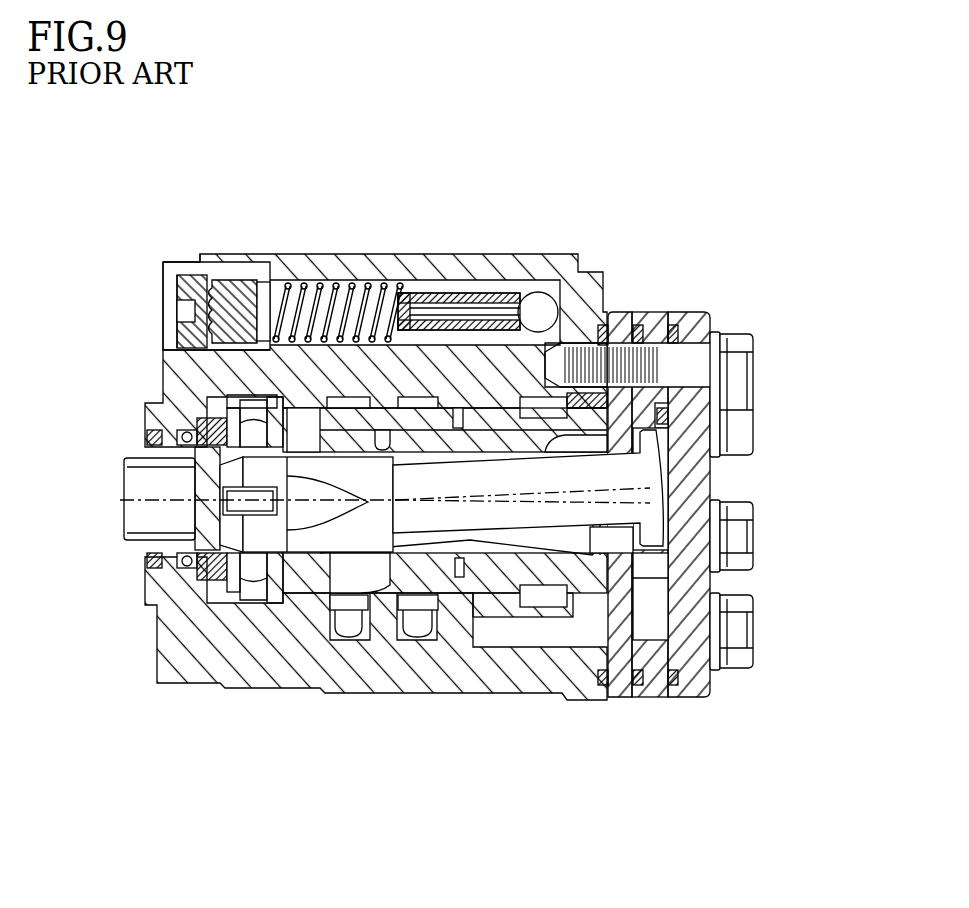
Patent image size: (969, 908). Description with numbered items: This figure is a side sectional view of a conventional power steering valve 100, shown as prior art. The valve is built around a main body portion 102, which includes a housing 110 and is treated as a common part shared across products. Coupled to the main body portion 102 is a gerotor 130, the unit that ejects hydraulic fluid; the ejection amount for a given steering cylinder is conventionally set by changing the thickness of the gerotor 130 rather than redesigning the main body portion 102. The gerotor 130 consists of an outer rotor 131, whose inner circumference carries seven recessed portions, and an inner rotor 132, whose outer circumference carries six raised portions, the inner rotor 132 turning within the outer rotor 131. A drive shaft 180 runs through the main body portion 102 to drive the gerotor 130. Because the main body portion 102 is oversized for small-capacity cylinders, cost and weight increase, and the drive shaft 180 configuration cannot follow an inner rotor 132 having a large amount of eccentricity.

The power steering valve 100 is at (715, 232).
The main body portion 102 is at (177, 251).
The housing 110 is at (200, 665).
The gerotor 130 is at (652, 302).
The outer rotor 131 is at (668, 392).
The inner rotor 132 is at (665, 414).
The drive shaft 180 is at (462, 510).